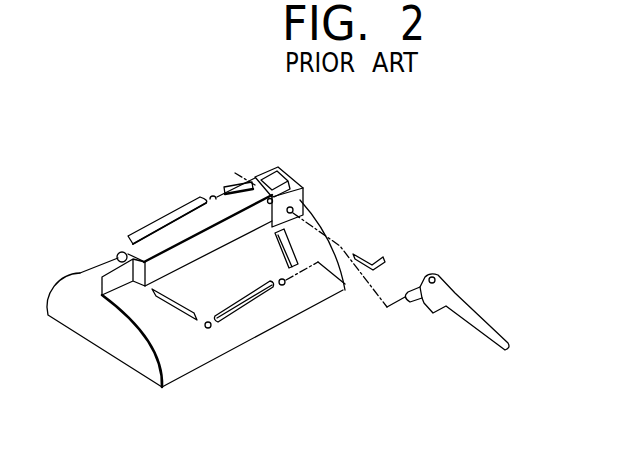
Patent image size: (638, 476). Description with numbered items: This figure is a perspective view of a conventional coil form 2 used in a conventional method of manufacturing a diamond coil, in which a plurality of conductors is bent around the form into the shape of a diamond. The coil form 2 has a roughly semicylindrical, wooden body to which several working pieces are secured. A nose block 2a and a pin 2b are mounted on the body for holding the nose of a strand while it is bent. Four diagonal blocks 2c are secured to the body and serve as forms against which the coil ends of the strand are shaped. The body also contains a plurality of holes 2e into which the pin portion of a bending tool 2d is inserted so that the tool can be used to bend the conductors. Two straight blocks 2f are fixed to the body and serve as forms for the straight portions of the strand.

The coil form 2 is at (300, 200).
The nose block 2a is at (280, 168).
The pin 2b is at (363, 257).
The diagonal blocks 2c is at (234, 172).
The bending tool 2d is at (467, 310).
The holes 2e is at (122, 252).
The straight blocks 2f is at (165, 218).